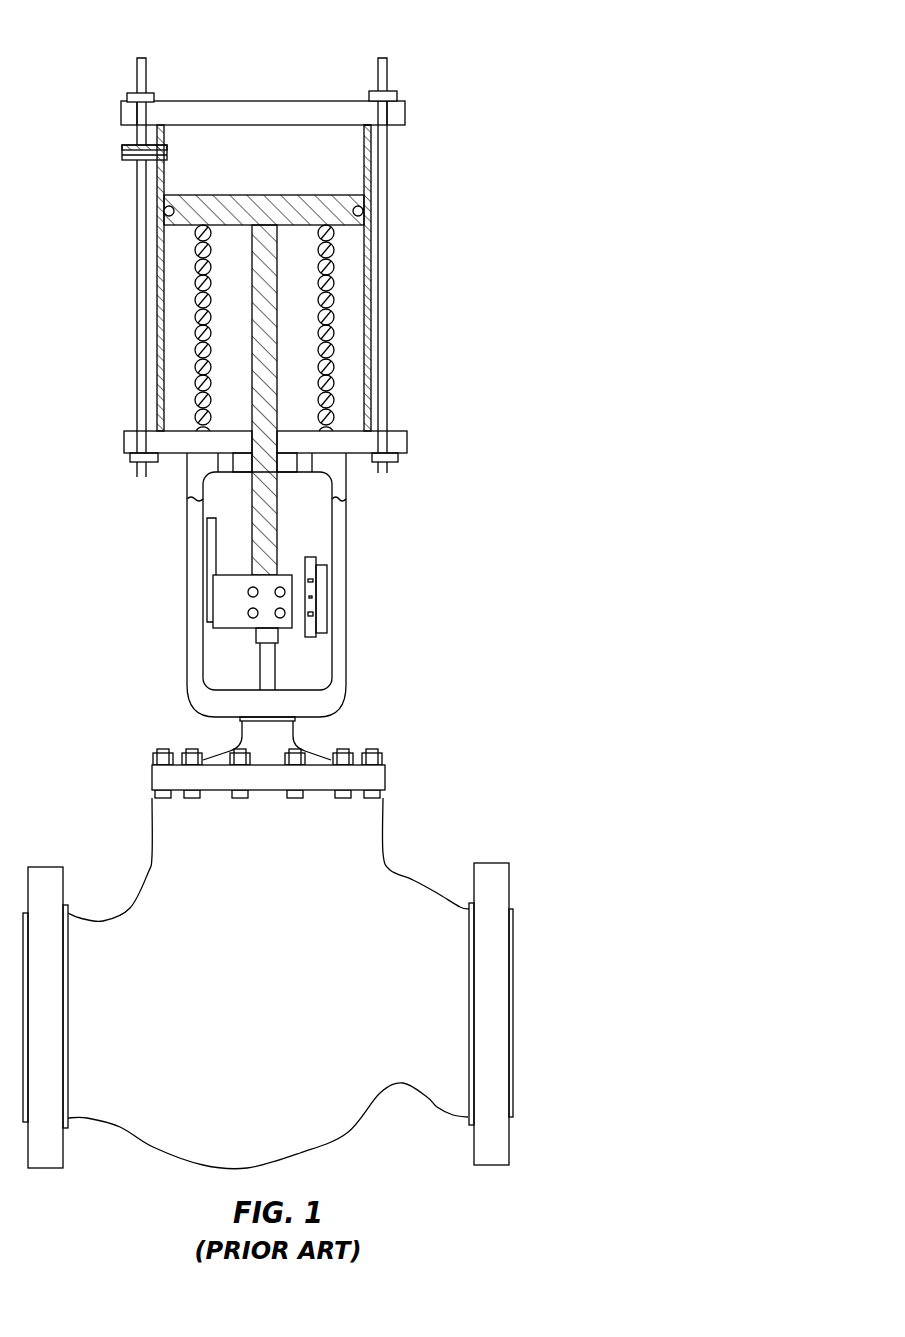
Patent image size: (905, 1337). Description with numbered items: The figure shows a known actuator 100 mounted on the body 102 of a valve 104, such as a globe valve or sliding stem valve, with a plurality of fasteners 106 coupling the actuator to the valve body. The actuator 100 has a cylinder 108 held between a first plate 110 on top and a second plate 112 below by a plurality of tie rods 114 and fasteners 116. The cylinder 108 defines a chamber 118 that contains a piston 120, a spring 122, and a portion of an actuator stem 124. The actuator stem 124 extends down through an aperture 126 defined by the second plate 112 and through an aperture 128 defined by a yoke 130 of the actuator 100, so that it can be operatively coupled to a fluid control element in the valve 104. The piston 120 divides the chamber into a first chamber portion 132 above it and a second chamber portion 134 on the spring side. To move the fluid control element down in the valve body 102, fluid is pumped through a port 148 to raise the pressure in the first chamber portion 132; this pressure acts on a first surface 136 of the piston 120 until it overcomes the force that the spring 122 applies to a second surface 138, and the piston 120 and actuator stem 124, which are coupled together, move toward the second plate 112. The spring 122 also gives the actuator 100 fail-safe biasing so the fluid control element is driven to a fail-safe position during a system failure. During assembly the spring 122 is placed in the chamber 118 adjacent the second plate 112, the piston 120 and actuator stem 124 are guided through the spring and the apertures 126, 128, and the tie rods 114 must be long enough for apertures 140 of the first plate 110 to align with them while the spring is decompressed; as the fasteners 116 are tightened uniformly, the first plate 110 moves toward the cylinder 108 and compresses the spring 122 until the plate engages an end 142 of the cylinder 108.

The actuator 100 is at (522, 61).
The body 102 is at (368, 852).
The valve 104 is at (546, 884).
The fasteners 106 is at (163, 760).
The cylinder 108 is at (158, 390).
The first plate 110 is at (293, 107).
The second plate 112 is at (407, 437).
The tie rods 114 is at (136, 58).
The fasteners 116 is at (127, 97).
The chamber 118 is at (352, 180).
The piston 120 is at (338, 218).
The spring 122 is at (322, 340).
The actuator stem 124 is at (265, 325).
The aperture 126 is at (297, 447).
The aperture 128 is at (238, 471).
The yoke 130 is at (193, 577).
The first chamber portion 132 is at (192, 175).
The second chamber portion 134 is at (178, 278).
The first surface 136 is at (313, 195).
The second surface 138 is at (180, 228).
The apertures 140 is at (133, 118).
The end 142 is at (368, 130).
The port 148 is at (122, 152).